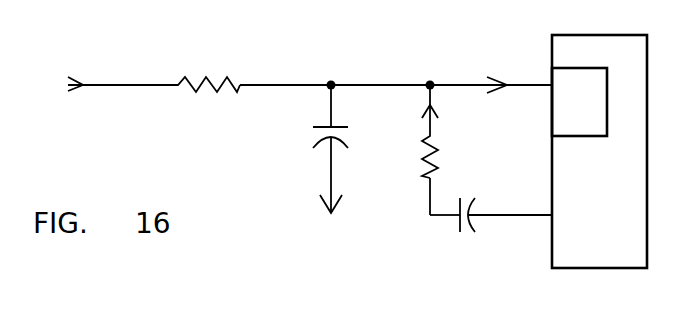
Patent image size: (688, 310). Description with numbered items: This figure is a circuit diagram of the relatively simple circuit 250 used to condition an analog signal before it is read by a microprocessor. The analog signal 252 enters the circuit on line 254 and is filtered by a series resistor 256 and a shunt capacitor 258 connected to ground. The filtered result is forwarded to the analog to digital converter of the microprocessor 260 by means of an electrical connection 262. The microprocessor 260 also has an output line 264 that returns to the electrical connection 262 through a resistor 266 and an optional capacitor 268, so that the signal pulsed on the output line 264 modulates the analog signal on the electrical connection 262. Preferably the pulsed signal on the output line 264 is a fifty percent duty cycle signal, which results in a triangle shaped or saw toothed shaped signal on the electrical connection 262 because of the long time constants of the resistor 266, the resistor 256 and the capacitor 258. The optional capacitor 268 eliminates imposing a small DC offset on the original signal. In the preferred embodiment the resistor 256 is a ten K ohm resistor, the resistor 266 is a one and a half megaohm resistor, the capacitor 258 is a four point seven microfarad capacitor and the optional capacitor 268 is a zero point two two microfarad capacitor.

The circuit 250 is at (228, 46).
The analog signal 252 is at (70, 80).
The line 254 is at (125, 85).
The resistor 256 is at (215, 92).
The capacitor 258 is at (320, 128).
The microprocessor 260 is at (620, 187).
The electrical connection 262 is at (393, 84).
The output line 264 is at (515, 213).
The resistor 266 is at (435, 153).
The optional capacitor 268 is at (458, 225).